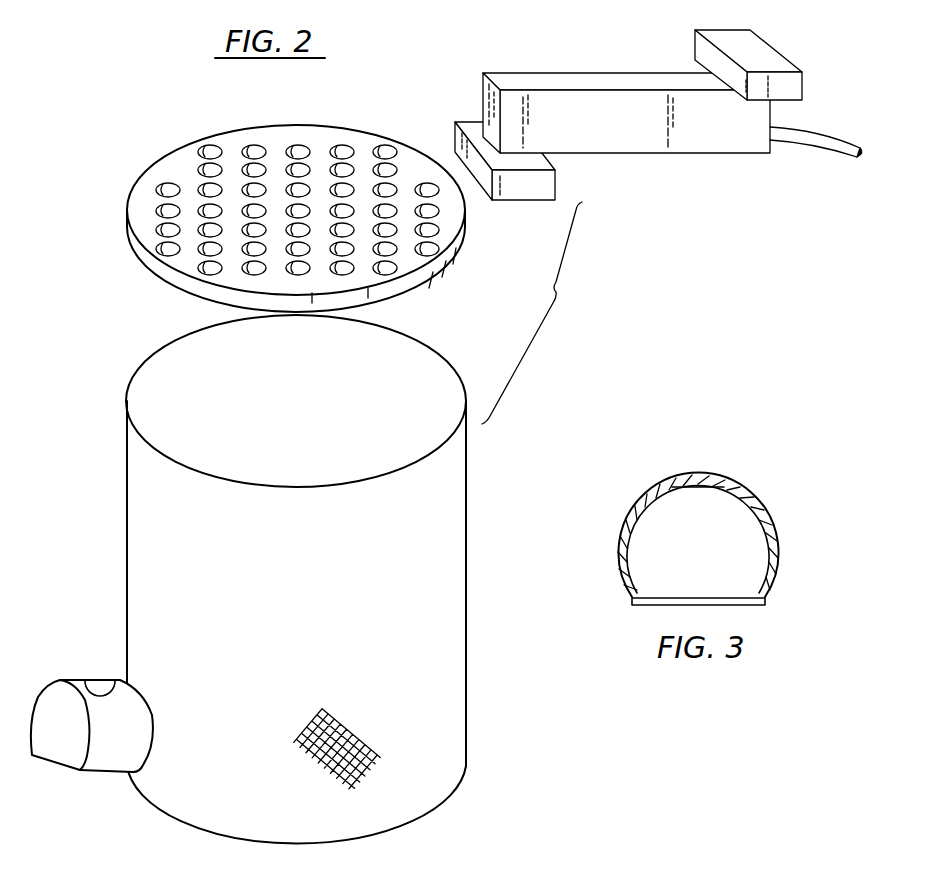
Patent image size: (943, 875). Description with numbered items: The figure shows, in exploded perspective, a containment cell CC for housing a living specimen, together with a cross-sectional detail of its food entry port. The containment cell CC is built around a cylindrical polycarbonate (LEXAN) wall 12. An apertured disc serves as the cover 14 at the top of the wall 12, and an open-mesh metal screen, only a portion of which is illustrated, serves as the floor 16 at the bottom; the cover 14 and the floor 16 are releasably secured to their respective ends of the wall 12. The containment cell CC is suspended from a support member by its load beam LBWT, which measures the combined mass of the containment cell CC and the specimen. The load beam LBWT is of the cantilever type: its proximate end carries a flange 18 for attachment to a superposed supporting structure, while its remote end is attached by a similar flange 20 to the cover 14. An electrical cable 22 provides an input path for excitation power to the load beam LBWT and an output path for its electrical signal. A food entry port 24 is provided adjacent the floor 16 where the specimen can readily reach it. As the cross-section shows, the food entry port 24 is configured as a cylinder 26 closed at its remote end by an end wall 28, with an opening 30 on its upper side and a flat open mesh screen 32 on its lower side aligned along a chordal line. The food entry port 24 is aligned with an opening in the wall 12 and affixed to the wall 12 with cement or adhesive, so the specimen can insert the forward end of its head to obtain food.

In FIG. 2, the wall 12 is at (466, 468).
In FIG. 2, the cover 14 is at (426, 282).
In FIG. 2, the floor 16 is at (366, 765).
In FIG. 2, the flange 18 is at (788, 60).
In FIG. 2, the flange 20 is at (557, 183).
In FIG. 2, the electrical cable 22 is at (797, 127).
In FIG. 2, the food entry port 24 is at (92, 713).
In FIG. 3, the food entry port 24 is at (679, 517).
In FIG. 3, the cylinder 26 is at (624, 531).
In FIG. 2, the end wall 28 is at (68, 750).
In FIG. 2, the opening 30 is at (100, 669).
In FIG. 3, the opening 30 is at (712, 482).
In FIG. 3, the flat open mesh screen 32 is at (704, 597).
In FIG. 2, the containment cell CC is at (100, 335).
In FIG. 2, the load beam LBWT is at (724, 153).